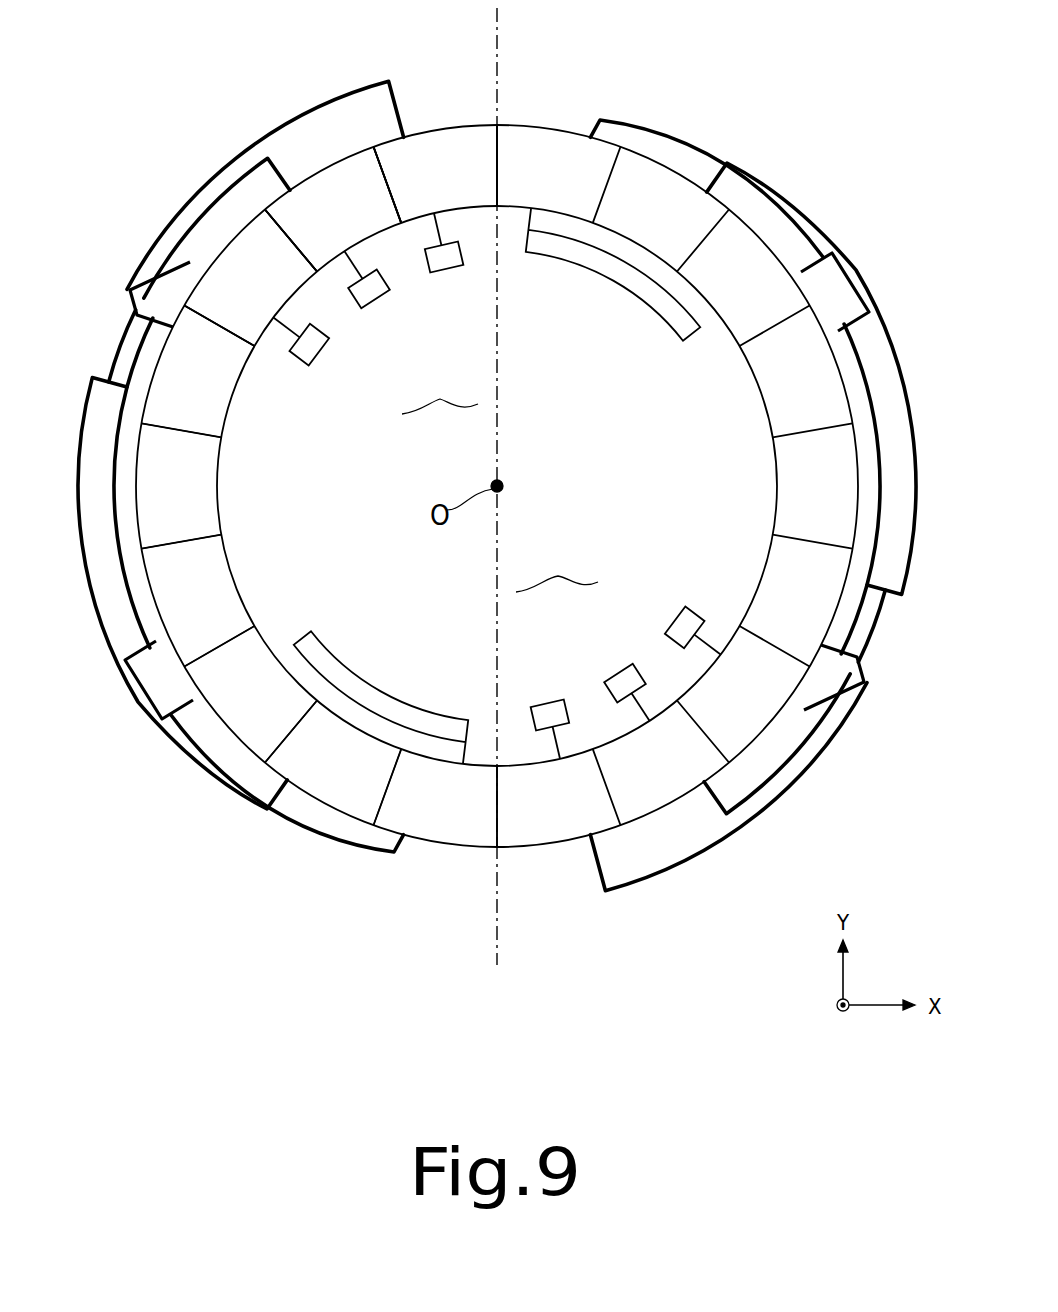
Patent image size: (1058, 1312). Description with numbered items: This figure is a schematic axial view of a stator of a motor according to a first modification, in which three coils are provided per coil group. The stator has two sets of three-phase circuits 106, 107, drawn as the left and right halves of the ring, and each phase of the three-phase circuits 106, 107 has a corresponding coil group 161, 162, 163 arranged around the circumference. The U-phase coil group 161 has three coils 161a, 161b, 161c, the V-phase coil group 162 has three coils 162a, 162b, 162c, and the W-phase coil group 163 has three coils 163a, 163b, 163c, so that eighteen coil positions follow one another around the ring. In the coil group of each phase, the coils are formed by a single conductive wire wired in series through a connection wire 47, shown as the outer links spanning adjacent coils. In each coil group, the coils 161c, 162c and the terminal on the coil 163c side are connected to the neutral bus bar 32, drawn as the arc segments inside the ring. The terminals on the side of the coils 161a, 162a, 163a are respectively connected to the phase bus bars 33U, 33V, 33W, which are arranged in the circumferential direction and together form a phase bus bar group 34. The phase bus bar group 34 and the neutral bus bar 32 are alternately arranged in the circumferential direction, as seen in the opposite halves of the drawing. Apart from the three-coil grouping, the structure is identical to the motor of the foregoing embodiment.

The neutral bus bar 32 is at (585, 272).
The U-phase bus bar 33U is at (444, 272).
The V-phase bus bar 33V is at (372, 302).
The W-phase bus bar 33W is at (316, 356).
The phase bus bar group 34 is at (500, 495).
The connection wire 47 is at (112, 350).
The three-phase circuit 106 is at (143, 125).
The three-phase circuit 107 is at (882, 132).
The U-phase coil group 161 is at (447, 124).
The V-phase coil group 162 is at (342, 155).
The W-phase coil group 163 is at (243, 226).
The coil 161a is at (479, 471).
The coil 161b is at (485, 487).
The coil 161c is at (497, 514).
The coil 162a is at (476, 487).
The coil 162b is at (495, 510).
The coil 162c is at (497, 510).
The coil 163a is at (478, 487).
The coil 163b is at (497, 515).
The coil 163c is at (497, 502).